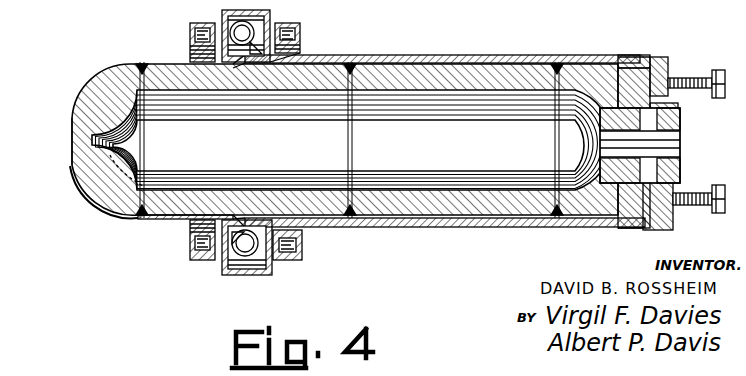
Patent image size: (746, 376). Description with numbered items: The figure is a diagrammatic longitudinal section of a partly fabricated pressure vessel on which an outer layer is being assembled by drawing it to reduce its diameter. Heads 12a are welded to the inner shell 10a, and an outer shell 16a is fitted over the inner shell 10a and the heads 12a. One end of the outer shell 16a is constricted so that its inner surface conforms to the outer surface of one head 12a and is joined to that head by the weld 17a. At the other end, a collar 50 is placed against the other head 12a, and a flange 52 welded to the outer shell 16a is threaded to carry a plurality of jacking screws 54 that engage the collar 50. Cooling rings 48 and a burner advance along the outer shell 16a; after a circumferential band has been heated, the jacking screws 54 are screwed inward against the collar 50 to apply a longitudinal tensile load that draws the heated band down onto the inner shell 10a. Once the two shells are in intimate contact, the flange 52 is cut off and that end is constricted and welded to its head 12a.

The inner shell 10a is at (375, 200).
The heads 12a is at (100, 177).
The outer shell 16a is at (372, 60).
The weld 17a is at (72, 162).
The cooling rings 48 is at (205, 6).
The collar 50 is at (623, 63).
The flange 52 is at (652, 57).
The jacking screws 54 is at (690, 77).